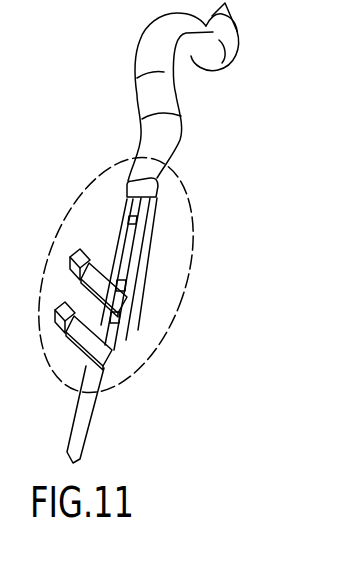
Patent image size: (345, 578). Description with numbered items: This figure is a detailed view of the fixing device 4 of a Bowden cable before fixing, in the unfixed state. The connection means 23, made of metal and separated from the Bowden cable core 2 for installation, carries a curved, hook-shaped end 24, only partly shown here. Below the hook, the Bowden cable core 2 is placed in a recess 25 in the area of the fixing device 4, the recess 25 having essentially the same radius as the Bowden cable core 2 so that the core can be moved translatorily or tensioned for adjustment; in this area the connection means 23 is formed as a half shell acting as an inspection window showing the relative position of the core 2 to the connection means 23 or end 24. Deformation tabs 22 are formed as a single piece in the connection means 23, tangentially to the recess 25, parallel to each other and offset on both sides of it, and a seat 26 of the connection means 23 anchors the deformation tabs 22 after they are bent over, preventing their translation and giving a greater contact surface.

The Bowden cable core 2 is at (83, 418).
The fixing device 4 is at (152, 358).
The deformation tabs 22 is at (55, 310).
The connection means 23 is at (156, 147).
The curved, hook-shaped end 24 is at (198, 45).
The recess 25 is at (130, 210).
The seat 26 is at (122, 290).